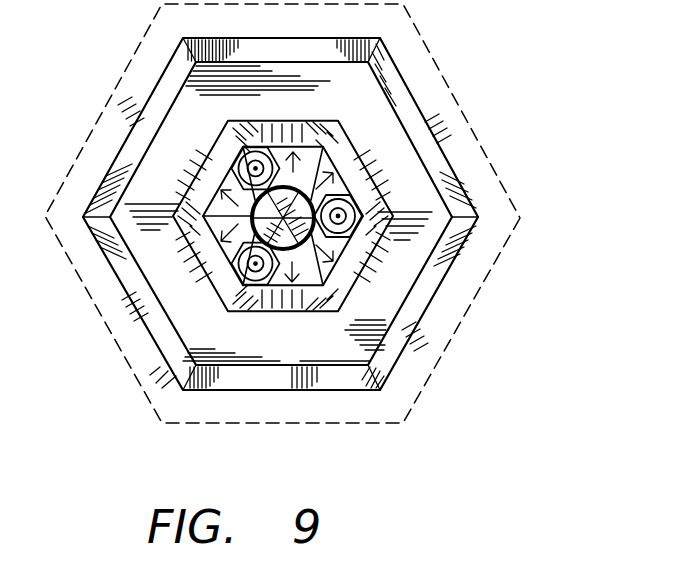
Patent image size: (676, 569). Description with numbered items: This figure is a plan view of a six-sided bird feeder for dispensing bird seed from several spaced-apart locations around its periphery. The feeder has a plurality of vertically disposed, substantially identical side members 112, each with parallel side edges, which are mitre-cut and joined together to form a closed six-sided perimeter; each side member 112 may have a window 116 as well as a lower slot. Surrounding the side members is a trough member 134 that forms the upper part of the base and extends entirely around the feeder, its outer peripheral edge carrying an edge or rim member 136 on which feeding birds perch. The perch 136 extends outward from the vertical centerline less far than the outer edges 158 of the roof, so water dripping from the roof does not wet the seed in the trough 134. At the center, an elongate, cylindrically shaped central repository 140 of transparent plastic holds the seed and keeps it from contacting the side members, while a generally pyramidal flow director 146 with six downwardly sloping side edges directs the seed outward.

The side member 112 is at (332, 116).
The window 116 is at (352, 170).
The trough member 134 is at (400, 260).
The edge or rim member 136 is at (397, 337).
The central repository 140 is at (238, 262).
The flow director 146 is at (281, 290).
The outer edges of the roof 158 is at (412, 408).